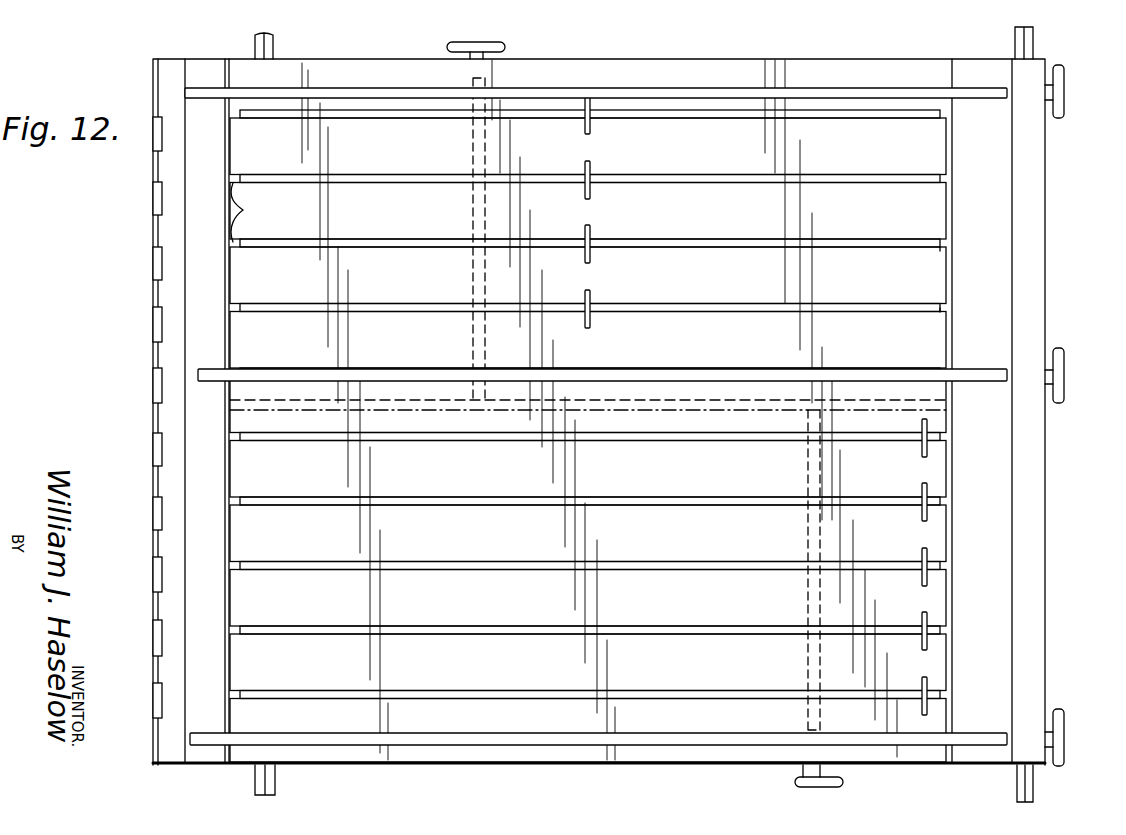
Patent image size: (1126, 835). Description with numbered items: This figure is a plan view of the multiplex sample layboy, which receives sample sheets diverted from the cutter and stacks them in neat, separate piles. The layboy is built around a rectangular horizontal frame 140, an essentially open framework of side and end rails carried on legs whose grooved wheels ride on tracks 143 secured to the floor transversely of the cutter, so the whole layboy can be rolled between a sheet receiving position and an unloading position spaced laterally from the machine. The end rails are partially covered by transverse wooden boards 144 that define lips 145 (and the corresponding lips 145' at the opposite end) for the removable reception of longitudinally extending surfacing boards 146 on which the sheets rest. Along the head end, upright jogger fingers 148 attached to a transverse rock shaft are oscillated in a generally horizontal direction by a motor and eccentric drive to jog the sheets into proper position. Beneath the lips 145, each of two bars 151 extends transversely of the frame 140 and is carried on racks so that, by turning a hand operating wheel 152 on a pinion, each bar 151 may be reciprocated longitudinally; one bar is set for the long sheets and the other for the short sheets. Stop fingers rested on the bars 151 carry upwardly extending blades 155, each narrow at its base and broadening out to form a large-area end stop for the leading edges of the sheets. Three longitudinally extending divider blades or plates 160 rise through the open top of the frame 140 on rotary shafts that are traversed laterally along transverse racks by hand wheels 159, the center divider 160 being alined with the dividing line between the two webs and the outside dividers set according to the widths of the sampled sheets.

The rectangular horizontal frame 140 is at (448, 762).
The tracks 143 is at (276, 783).
The transverse wooden boards 144 is at (200, 240).
The lips 145 is at (260, 212).
The slat end piece 145' is at (906, 279).
The surfacing boards 146 is at (425, 226).
The jogger fingers 148 is at (153, 503).
The bar 151 is at (487, 278).
The hand operating wheel 152 is at (468, 45).
The blade 155 is at (590, 162).
The hand wheel 159 is at (1065, 86).
The divider blade or plate 160 is at (770, 92).